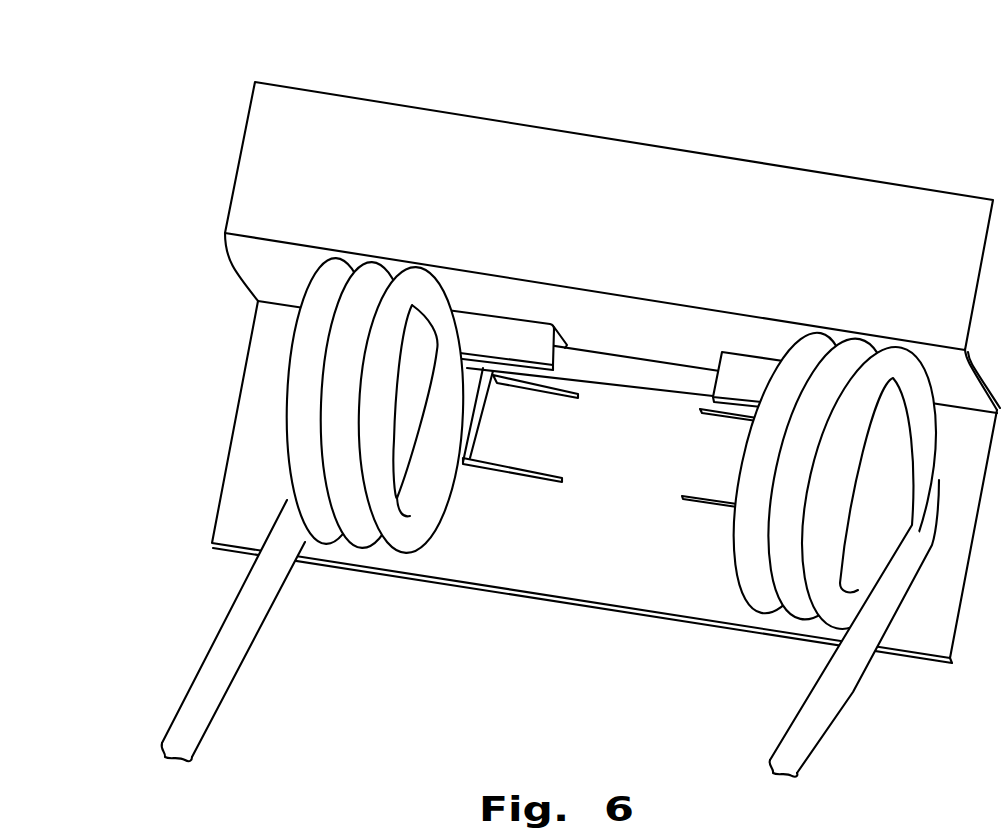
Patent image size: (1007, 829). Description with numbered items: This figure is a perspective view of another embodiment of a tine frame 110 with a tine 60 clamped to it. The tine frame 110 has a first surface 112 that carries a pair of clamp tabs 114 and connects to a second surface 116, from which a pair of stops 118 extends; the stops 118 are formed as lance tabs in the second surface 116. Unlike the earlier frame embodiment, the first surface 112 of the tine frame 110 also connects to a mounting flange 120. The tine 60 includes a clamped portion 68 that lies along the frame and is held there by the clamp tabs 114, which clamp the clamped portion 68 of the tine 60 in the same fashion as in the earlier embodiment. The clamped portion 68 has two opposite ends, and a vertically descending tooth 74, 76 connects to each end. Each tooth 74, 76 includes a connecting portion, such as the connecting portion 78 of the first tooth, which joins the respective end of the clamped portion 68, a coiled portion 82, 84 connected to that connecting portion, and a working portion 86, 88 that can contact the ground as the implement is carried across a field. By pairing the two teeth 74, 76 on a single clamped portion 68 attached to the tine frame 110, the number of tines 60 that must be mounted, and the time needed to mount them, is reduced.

The tine 60 is at (561, 517).
The clamped portion 68 is at (633, 385).
The tooth 74 is at (332, 509).
The tooth 76 is at (835, 550).
The connecting portion 78 is at (435, 480).
The coiled portion 82 is at (355, 540).
The coiled portion 84 is at (793, 608).
The working portion 86 is at (210, 702).
The working portion 88 is at (810, 737).
The tine frame 110 is at (563, 372).
The first surface 112 is at (263, 262).
The clamp tabs 114 is at (487, 332).
The second surface 116 is at (602, 587).
The stops 118 is at (503, 448).
The mounting flange 120 is at (253, 220).